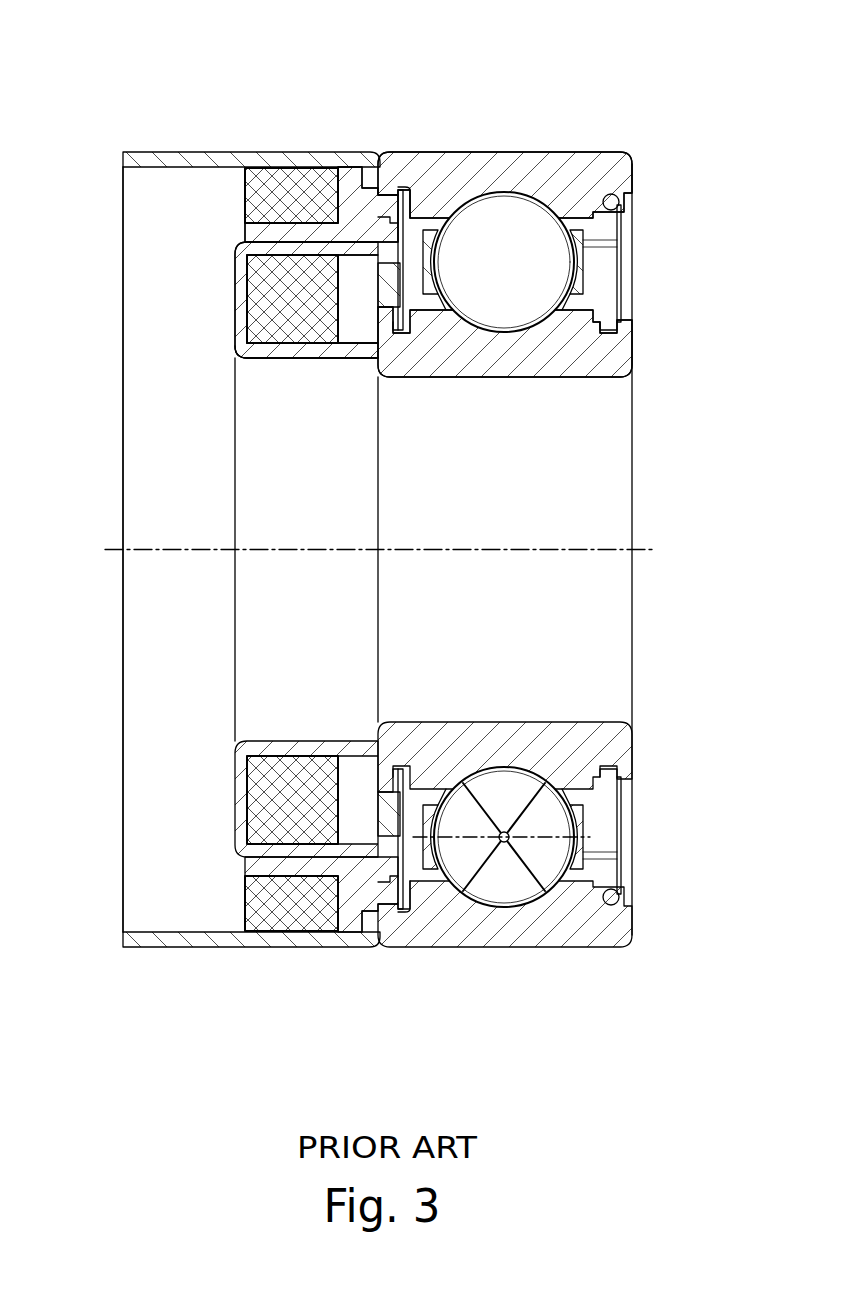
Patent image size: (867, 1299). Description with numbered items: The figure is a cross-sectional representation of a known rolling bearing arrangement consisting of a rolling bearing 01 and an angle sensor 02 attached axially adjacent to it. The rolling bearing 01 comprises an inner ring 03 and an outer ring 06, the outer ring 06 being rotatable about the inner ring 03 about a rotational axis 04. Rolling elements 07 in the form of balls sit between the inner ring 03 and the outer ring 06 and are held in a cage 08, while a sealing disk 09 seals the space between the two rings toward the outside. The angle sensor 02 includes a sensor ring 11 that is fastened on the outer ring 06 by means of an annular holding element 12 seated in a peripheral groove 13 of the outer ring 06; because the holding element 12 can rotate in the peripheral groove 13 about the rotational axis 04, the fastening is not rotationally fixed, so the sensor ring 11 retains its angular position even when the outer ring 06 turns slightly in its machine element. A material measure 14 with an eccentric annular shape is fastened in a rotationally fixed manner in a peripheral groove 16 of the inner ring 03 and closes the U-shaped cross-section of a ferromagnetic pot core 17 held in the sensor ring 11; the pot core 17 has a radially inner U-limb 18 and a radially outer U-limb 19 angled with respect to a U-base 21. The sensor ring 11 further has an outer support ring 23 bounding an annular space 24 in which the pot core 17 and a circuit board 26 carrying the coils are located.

The rolling bearing 01 is at (519, 137).
The angle sensor 02 is at (270, 137).
The inner ring 03 is at (614, 348).
The rotational axis 04 is at (362, 549).
The outer ring 06 is at (620, 178).
The rolling elements 07 is at (517, 262).
The cage 08 is at (578, 823).
The sealing disk 09 is at (620, 284).
The sensor ring 11 is at (178, 137).
The holding element 12 is at (373, 912).
The peripheral groove 13 is at (377, 893).
The material measure 14 is at (378, 292).
The peripheral groove 16 is at (410, 781).
The pot core 17 is at (234, 338).
The radially inner U-limb 18 is at (280, 352).
The radially outer U-limb 19 is at (268, 248).
The U-base 21 is at (253, 295).
The outer support ring 23 is at (195, 940).
The annular space 24 is at (240, 908).
The circuit board 26 is at (254, 192).